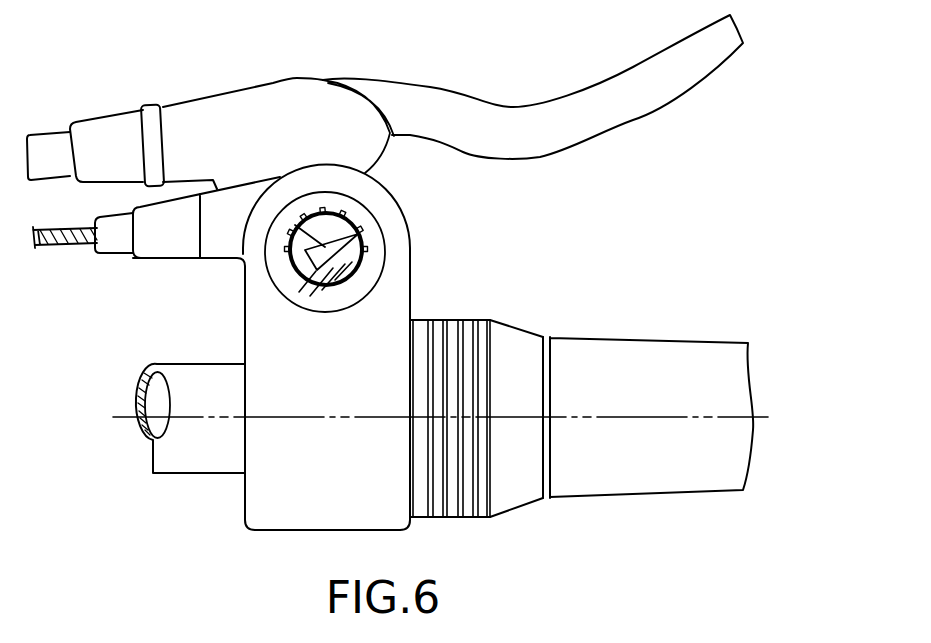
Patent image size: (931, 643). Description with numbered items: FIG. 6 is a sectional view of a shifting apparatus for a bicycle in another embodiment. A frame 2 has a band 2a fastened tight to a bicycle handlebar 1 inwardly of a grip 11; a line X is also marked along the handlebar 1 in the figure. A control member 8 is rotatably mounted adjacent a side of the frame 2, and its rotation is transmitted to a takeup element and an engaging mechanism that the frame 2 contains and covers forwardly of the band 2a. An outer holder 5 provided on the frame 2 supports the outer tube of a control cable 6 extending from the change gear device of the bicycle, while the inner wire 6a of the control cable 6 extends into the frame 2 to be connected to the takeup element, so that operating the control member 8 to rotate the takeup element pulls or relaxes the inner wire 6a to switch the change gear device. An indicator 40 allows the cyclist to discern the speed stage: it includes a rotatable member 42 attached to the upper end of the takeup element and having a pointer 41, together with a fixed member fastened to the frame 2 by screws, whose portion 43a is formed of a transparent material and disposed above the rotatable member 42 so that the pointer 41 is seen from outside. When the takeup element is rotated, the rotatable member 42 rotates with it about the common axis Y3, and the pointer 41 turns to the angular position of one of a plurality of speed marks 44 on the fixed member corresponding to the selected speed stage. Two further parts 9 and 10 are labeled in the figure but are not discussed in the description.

The bicycle handlebar 1 is at (173, 473).
The frame 2 is at (224, 343).
The band 2a is at (247, 520).
The outer holder 5 is at (155, 252).
The control cable 6 is at (117, 242).
The inner wire 6a is at (57, 247).
The control member 8 is at (495, 510).
The lever housing 9 is at (277, 87).
The brake lever 10 is at (572, 135).
The grip 11 is at (678, 357).
The indicator 40 is at (400, 232).
The pointer 41 is at (318, 270).
The rotatable member 42 is at (347, 265).
The transparent portion 43a is at (375, 250).
The speed marks 44 is at (341, 212).
The handlebar axis X is at (428, 413).
The common axis Y3 is at (275, 207).